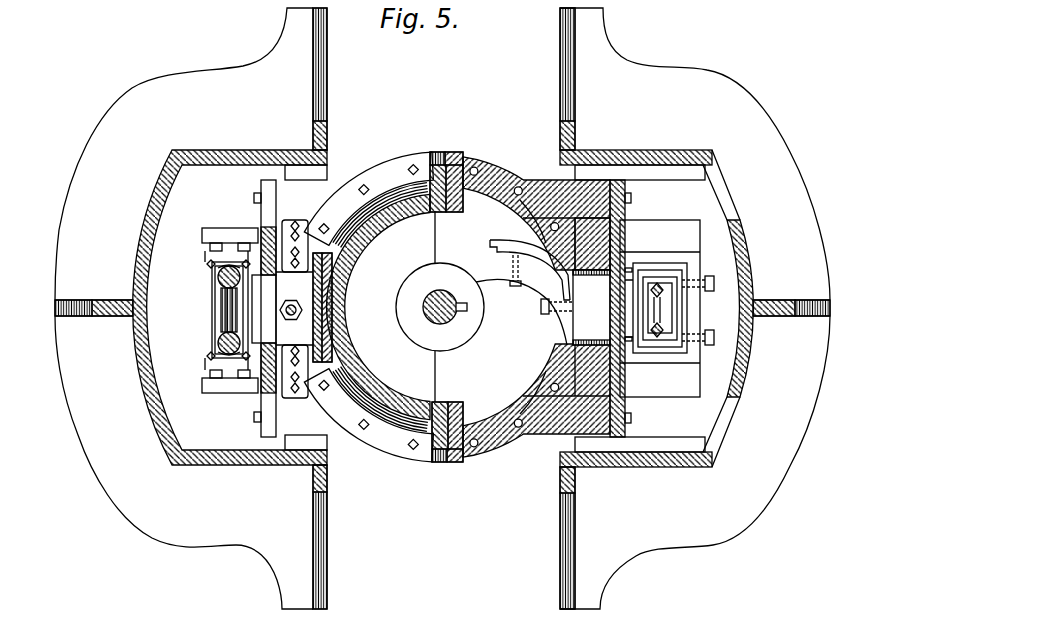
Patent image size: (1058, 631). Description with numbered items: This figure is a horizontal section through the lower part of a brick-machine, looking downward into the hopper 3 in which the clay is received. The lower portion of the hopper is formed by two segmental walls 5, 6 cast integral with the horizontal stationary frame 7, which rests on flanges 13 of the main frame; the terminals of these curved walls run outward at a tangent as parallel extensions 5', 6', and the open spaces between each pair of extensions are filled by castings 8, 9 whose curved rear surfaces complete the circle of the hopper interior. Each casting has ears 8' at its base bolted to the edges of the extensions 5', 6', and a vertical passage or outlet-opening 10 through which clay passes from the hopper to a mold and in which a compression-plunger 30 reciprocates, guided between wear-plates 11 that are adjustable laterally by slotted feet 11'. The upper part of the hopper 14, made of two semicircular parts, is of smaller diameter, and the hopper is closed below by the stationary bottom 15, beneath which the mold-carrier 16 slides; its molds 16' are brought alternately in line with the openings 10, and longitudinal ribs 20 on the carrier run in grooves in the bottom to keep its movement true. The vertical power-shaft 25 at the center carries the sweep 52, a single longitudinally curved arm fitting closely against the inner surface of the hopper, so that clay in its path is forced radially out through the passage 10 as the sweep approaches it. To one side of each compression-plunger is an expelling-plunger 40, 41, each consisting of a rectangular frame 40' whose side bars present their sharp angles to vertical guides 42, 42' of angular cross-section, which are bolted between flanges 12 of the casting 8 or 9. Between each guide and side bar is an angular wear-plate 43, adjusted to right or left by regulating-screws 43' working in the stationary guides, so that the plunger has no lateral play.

The hopper 3 is at (418, 155).
The segmental wall 5 is at (536, 413).
The wall extension 5' is at (533, 392).
The segmental wall 6 is at (536, 204).
The wall extension 6' is at (531, 221).
The horizontal stationary frame 7 is at (368, 307).
The casting 8 is at (251, 382).
The ears or lugs 8' is at (443, 312).
The casting 9 is at (590, 243).
The outlet-opening 10 is at (591, 307).
The wear-plates 11 is at (443, 273).
The slotted feet 11' is at (295, 382).
The vertical flanges 12 is at (221, 235).
The flanges or shoulders 13 is at (315, 173).
The upper part of the hopper 14 is at (349, 285).
The stationary bottom 15 is at (524, 312).
The mold-carrier 16 is at (660, 308).
The molds 16' is at (676, 303).
The longitudinal ribs 20 is at (648, 252).
The vertical power-shaft 25 is at (437, 316).
The compression-plunger 30 is at (291, 319).
The expelling-plunger 40 is at (212, 310).
The rectangular frame 40' is at (203, 312).
The expelling-plunger 41 is at (662, 318).
The vertical guide 42 is at (206, 354).
The vertical guide 42' is at (211, 273).
The angular wear-plate 43 is at (207, 310).
The regulating-screws 43' is at (215, 311).
The sweep 52 is at (521, 270).